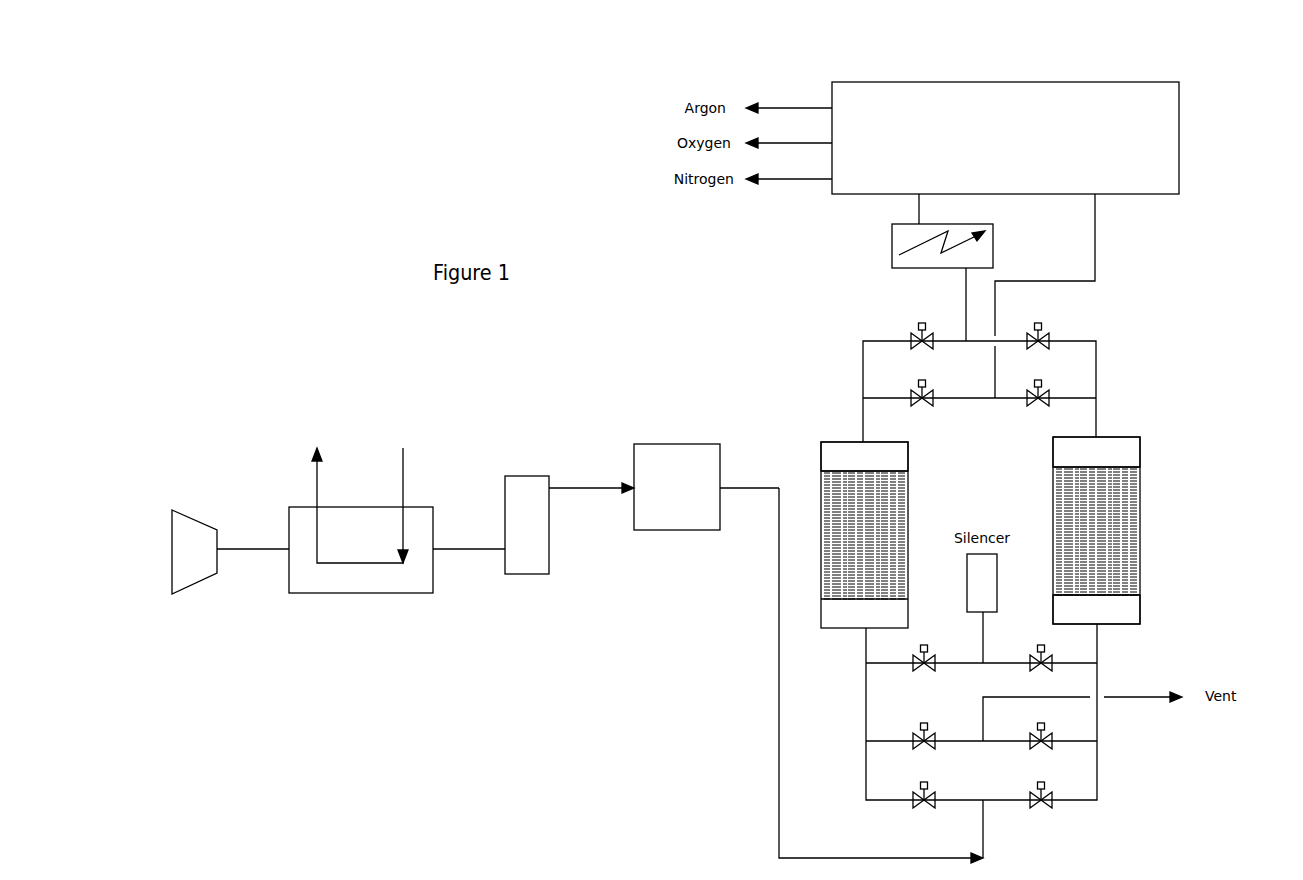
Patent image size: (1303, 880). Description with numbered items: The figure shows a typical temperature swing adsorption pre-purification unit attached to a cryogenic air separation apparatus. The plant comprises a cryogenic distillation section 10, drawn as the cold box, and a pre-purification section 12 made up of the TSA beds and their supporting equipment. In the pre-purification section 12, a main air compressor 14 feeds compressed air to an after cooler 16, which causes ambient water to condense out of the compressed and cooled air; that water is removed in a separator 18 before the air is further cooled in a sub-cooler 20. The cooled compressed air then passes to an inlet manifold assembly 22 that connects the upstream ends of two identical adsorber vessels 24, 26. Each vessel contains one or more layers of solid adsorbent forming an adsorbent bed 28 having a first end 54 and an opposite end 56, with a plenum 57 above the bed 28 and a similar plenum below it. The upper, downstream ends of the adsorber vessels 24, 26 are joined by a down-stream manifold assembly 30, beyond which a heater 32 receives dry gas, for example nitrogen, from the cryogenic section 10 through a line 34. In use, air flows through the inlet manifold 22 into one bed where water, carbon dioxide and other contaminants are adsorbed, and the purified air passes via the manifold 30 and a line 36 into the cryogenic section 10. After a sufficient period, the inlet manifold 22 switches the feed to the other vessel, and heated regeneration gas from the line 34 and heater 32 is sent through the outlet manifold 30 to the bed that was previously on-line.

The cryogenic distillation section 10 is at (1186, 136).
The pre-purification section 12 is at (1041, 518).
The main air compressor 14 is at (198, 513).
The after cooler 16 is at (350, 497).
The separator 18 is at (526, 470).
The sub-cooler 20 is at (683, 438).
The inlet manifold assembly 22 is at (1105, 762).
The adsorber vessel 24 is at (915, 489).
The adsorber vessel 26 is at (1133, 530).
The adsorbent bed 28 is at (1127, 545).
The down-stream manifold assembly 30 is at (1102, 367).
The heater 32 is at (898, 277).
The line 34 is at (927, 209).
The line 36 is at (1103, 229).
The first end 54 is at (1112, 463).
The opposite end 56 is at (1098, 598).
The plenum 57 is at (857, 457).